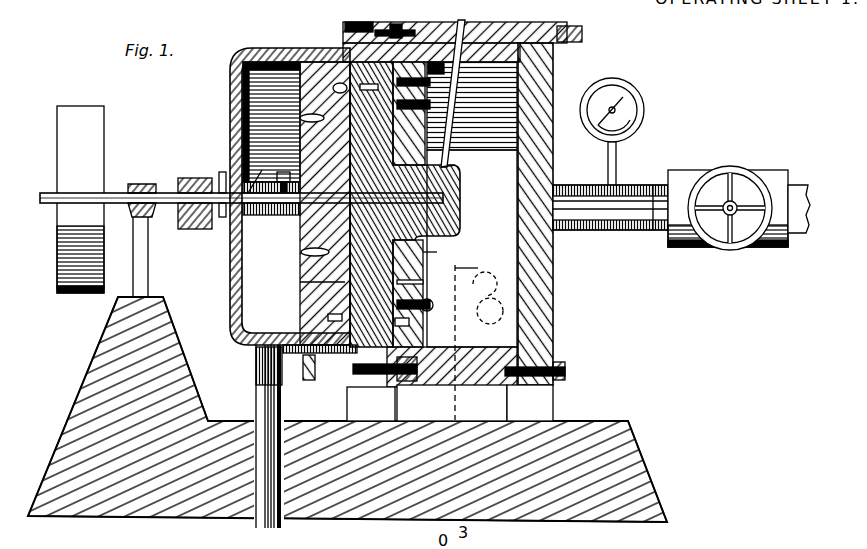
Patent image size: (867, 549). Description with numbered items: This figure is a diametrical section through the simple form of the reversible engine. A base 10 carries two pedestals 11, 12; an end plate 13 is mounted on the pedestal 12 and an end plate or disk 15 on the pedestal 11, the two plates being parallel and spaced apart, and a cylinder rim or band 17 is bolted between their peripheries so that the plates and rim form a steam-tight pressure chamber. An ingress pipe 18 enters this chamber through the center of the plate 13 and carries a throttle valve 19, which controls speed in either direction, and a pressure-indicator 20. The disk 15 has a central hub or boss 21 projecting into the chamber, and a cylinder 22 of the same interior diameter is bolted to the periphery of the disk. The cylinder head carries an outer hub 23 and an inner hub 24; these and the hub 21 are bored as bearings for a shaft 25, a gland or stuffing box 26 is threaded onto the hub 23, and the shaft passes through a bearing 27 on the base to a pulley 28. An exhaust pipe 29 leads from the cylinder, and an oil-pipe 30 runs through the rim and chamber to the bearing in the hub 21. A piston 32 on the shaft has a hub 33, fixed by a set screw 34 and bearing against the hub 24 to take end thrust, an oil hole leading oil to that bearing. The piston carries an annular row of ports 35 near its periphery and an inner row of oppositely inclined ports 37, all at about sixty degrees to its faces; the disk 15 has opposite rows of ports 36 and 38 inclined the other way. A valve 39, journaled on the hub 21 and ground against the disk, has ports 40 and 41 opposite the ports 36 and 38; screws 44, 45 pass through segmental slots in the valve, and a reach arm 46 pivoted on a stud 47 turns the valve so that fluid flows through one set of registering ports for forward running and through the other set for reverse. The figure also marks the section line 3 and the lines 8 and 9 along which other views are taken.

The section line 3— 3 is at (454, 83).
The line 8— 8 is at (358, 28).
The line 9— 9 is at (392, 30).
The base 10 is at (90, 383).
The pedestal 11 is at (350, 413).
The pedestal 12 is at (548, 413).
The end plate 13 is at (553, 308).
The end plate or disk 15 is at (475, 268).
The cylinder rim or band 17 is at (472, 248).
The ingress pipe 18 is at (618, 190).
The throttle valve 19 is at (732, 206).
The pressure-indicator 20 is at (630, 119).
The hub or boss 21 is at (462, 226).
The cylinder 22 is at (233, 88).
The hub or boss 23 is at (220, 178).
The hub or boss 24 is at (259, 175).
The shaft 25 is at (300, 282).
The gland or stuffing box 26 is at (182, 178).
The bearing 27 is at (146, 179).
The pulley 28 is at (80, 199).
The exhaust pipe 29 is at (262, 397).
The oil-pipe 30 is at (455, 165).
The piston 32 is at (312, 62).
The hub 33 is at (305, 209).
The set screw 34 is at (285, 177).
The ports 35 is at (337, 83).
The ports 36 is at (363, 84).
The ports 37 is at (300, 124).
The ports 38 is at (405, 135).
The valve 39 is at (441, 253).
The ports 40 is at (490, 311).
The ports 41 is at (485, 284).
The screw 44 is at (500, 90).
The screw 45 is at (433, 300).
The reach arm 46 is at (434, 62).
The stud 47 is at (465, 52).